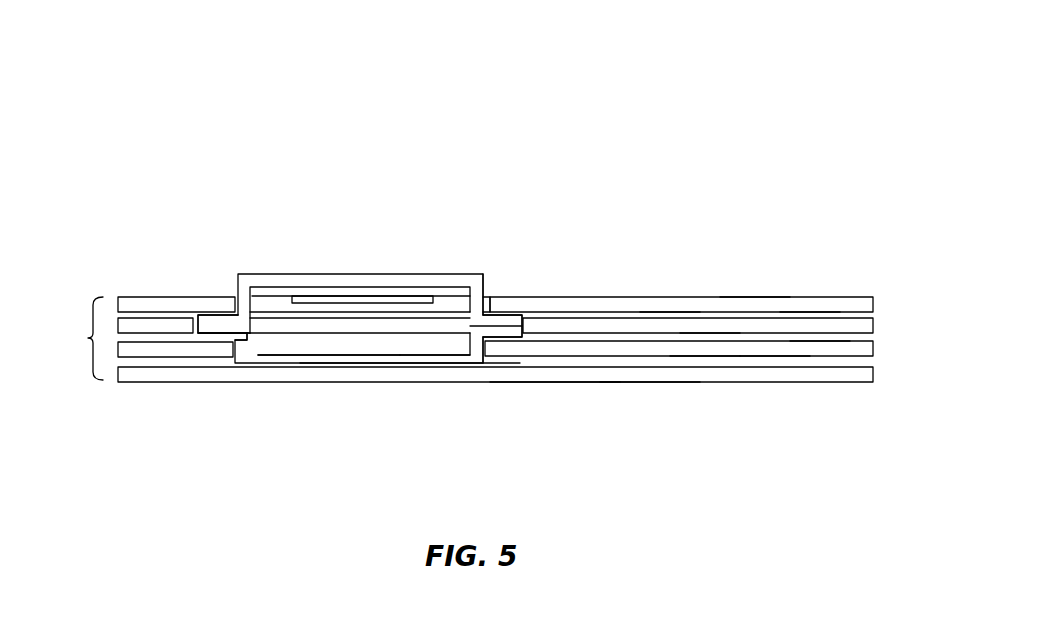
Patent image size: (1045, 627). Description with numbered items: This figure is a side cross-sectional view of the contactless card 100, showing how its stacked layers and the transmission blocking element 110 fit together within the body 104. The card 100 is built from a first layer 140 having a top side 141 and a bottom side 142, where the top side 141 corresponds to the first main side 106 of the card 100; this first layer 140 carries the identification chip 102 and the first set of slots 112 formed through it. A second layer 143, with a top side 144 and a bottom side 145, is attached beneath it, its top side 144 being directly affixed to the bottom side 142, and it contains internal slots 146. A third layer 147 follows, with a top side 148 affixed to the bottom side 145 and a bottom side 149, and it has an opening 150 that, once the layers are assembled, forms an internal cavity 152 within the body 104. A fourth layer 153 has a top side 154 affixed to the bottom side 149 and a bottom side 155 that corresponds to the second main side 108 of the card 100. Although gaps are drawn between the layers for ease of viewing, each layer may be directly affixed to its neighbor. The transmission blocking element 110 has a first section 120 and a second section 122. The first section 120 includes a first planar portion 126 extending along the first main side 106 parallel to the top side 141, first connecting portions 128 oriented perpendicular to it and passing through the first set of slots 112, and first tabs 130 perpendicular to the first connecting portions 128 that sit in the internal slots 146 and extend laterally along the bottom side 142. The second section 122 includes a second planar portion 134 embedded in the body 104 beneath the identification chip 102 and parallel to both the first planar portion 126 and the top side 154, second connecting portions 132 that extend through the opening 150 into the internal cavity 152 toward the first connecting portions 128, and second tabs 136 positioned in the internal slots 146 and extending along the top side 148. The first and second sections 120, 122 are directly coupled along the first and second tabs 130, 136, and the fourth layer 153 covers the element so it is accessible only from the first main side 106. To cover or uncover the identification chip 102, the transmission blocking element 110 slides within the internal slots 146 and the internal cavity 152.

The card 100 is at (189, 92).
The identification chip 102 is at (353, 296).
The body 104 is at (89, 338).
The first main side 106 is at (643, 294).
The second main side 108 is at (558, 386).
The transmission blocking element 110 is at (275, 270).
The first set of slots 112 is at (492, 301).
The first section 120 is at (427, 272).
The second section 122 is at (391, 370).
The first planar portion 126 is at (307, 281).
The first connecting portions 128 is at (480, 287).
The first tabs 130 is at (209, 322).
The second connecting portions 132 is at (243, 346).
The second planar portion 134 is at (330, 357).
The second tabs 136 is at (213, 334).
The first layer 140 is at (873, 304).
The top side 141 is at (753, 297).
The bottom side 142 is at (808, 312).
The second layer 143 is at (873, 327).
The top side 144 is at (668, 313).
The bottom side 145 is at (709, 333).
The internal slots 146 is at (531, 326).
The third layer 147 is at (873, 349).
The top side 148 is at (818, 342).
The bottom side 149 is at (773, 357).
The opening 150 is at (489, 351).
The internal cavity 152 is at (435, 357).
The fourth layer 153 is at (873, 373).
The top side 154 is at (706, 358).
The bottom side 155 is at (652, 384).